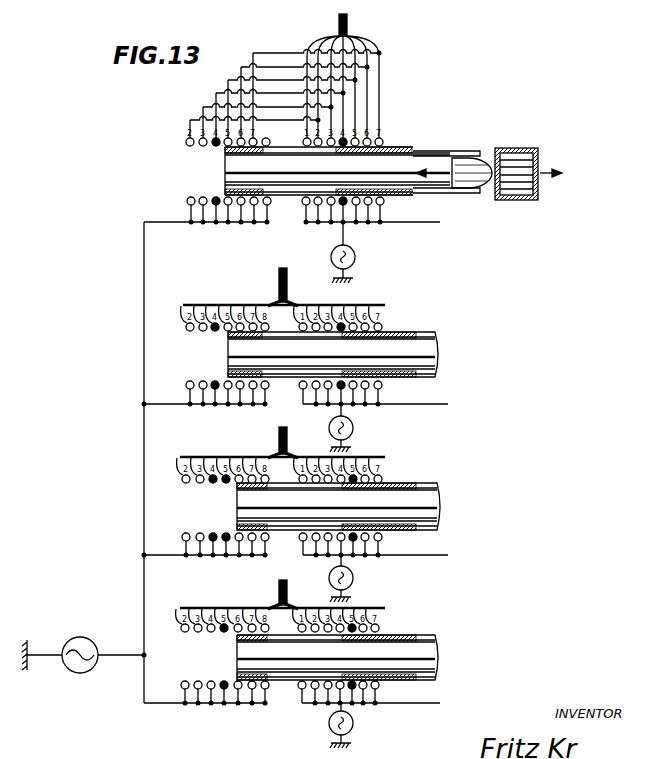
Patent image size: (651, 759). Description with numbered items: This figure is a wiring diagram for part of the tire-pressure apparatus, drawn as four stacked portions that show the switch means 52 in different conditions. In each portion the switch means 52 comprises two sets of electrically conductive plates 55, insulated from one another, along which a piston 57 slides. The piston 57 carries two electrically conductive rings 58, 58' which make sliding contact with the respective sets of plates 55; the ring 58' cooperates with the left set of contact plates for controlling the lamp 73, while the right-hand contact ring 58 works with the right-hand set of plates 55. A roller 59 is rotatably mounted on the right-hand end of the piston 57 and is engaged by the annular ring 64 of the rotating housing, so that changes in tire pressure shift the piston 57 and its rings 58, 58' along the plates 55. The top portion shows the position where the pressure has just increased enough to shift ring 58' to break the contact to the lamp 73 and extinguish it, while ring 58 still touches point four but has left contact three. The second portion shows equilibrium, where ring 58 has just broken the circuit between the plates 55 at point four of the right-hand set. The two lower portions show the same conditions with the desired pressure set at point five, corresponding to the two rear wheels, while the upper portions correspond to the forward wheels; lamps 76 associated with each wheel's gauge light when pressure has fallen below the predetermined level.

The switch means 52 is at (212, 159).
The electrically conductive plates 55 is at (203, 197).
The piston 57 is at (437, 152).
The electrically conductive ring 58 is at (379, 397).
The electrically conductive ring 58' is at (259, 416).
The roller 59 is at (483, 190).
The annular ring 64 is at (522, 147).
The lamp 73 is at (74, 673).
The lamp 76 is at (355, 258).